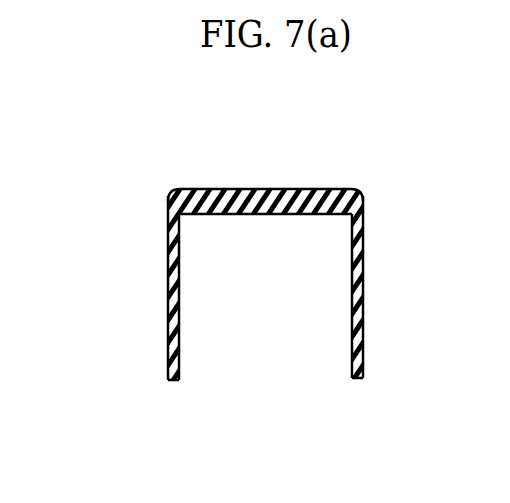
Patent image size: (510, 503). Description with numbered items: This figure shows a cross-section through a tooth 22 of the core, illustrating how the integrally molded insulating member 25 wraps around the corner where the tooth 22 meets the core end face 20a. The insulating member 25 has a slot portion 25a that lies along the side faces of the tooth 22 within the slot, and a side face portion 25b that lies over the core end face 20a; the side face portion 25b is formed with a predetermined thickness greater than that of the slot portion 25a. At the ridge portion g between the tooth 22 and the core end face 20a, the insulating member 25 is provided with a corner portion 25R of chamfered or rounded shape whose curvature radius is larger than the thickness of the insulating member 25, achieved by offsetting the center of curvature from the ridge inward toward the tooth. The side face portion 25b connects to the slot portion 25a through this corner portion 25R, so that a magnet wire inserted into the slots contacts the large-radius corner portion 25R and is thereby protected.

The insulating member 25 is at (364, 242).
The slot portion 25a is at (168, 332).
The side face portion 25b is at (236, 189).
The corner portion 25R is at (171, 189).
The core end face 20a is at (300, 189).
The tooth 22 is at (332, 284).
The ridge portion g is at (168, 196).